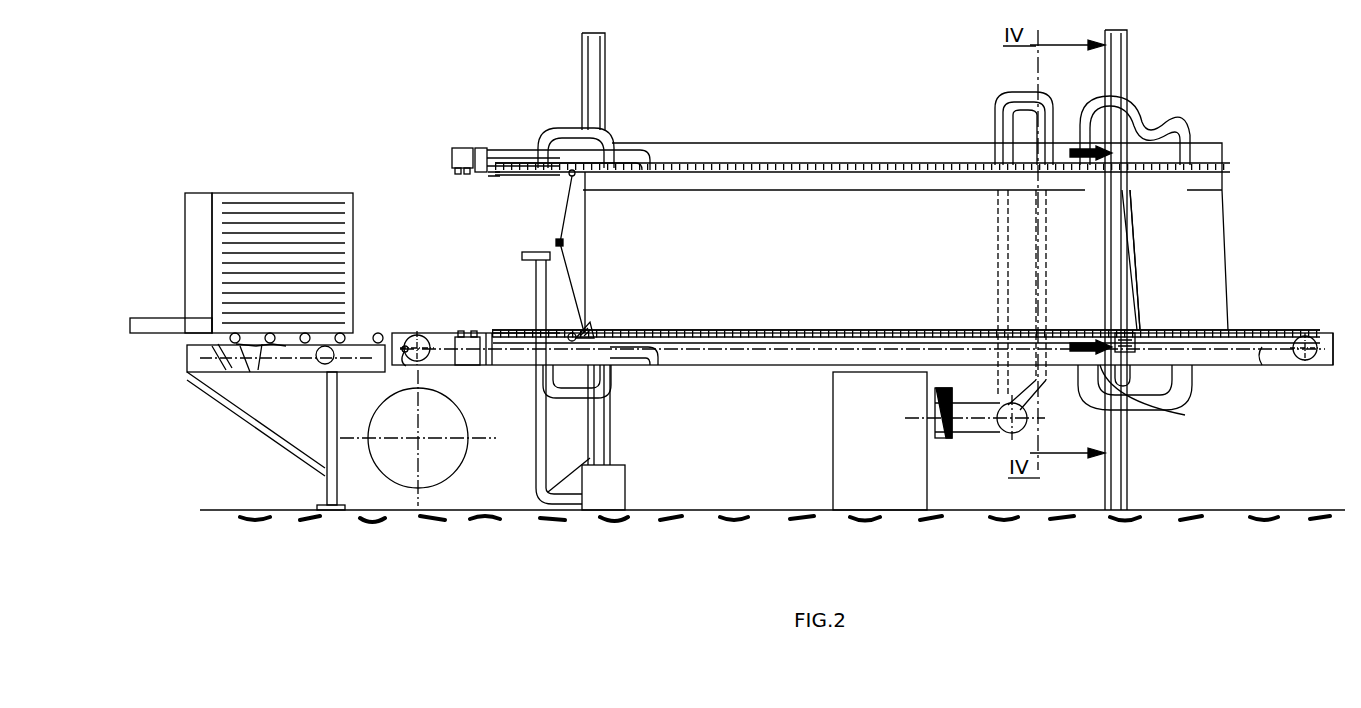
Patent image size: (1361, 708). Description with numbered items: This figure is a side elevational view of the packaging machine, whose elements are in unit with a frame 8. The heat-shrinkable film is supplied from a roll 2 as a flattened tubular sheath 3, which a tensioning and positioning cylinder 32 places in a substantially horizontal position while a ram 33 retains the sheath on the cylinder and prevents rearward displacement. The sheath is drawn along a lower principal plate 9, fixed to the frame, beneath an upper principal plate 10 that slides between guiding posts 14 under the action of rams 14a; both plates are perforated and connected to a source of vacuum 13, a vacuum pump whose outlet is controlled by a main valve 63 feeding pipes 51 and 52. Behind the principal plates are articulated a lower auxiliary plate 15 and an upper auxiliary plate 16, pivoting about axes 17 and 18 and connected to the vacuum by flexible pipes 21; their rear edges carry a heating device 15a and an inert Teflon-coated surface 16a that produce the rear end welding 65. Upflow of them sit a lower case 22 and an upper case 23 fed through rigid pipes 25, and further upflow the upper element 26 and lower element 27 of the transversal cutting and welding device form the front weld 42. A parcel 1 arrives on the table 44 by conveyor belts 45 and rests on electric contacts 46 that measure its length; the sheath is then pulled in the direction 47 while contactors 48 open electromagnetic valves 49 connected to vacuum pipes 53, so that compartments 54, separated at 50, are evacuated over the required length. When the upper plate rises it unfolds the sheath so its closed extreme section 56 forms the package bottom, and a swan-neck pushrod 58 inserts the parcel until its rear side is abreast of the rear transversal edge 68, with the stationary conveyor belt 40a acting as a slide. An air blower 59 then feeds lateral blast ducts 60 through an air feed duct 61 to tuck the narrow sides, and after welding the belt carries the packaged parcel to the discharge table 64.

The parcel 1 is at (246, 192).
The roll 2 is at (390, 468).
The flattened tubular sheath 3 is at (443, 327).
The frame 8 is at (1330, 372).
The lower principal plate 9 is at (766, 348).
The upper principal plate 10 is at (834, 176).
The source of vacuum 13 is at (834, 462).
The guiding posts 14 is at (536, 464).
The rams 14a is at (552, 496).
The lower auxiliary plate 15 is at (498, 334).
The heating device 15a is at (482, 334).
The upper auxiliary plate 16 is at (515, 176).
The inert Teflon-coated surface 16a is at (498, 176).
The axis 17 is at (568, 324).
The axis 18 is at (572, 176).
The flexible pipes 21 is at (586, 138).
The lower case 22 is at (489, 363).
The upper case 23 is at (484, 150).
The rigid pipes 25 is at (638, 150).
The upper element of welding device 26 is at (464, 146).
The lower element of welding device 27 is at (468, 365).
The tensioning and positioning cylinder 32 is at (416, 342).
The ram 33 is at (404, 362).
The conveyor belt 40a is at (1300, 328).
The weld 42 is at (1140, 254).
The table 44 is at (299, 372).
The conveyor belts 45 is at (222, 370).
The electric contacts 46 is at (256, 372).
The direction 47 is at (428, 257).
The contactors 48 is at (1136, 334).
The electromagnetic valves 49 is at (1094, 170).
The separation 50 is at (1136, 166).
The pipe 51 is at (1052, 380).
The pipe 52 is at (1000, 380).
The vacuum pipes 53 is at (1132, 110).
The compartments 54 is at (1214, 164).
The extreme section 56 is at (1132, 218).
The pushrod 58 is at (190, 250).
The air blower 59 is at (607, 480).
The lateral blast ducts 60 is at (536, 252).
The air feed duct 61 is at (546, 456).
The main valve 63 is at (940, 440).
The discharge table 64 is at (1266, 366).
The rear end welding 65 is at (564, 242).
The rear transversal edge 68 is at (596, 328).